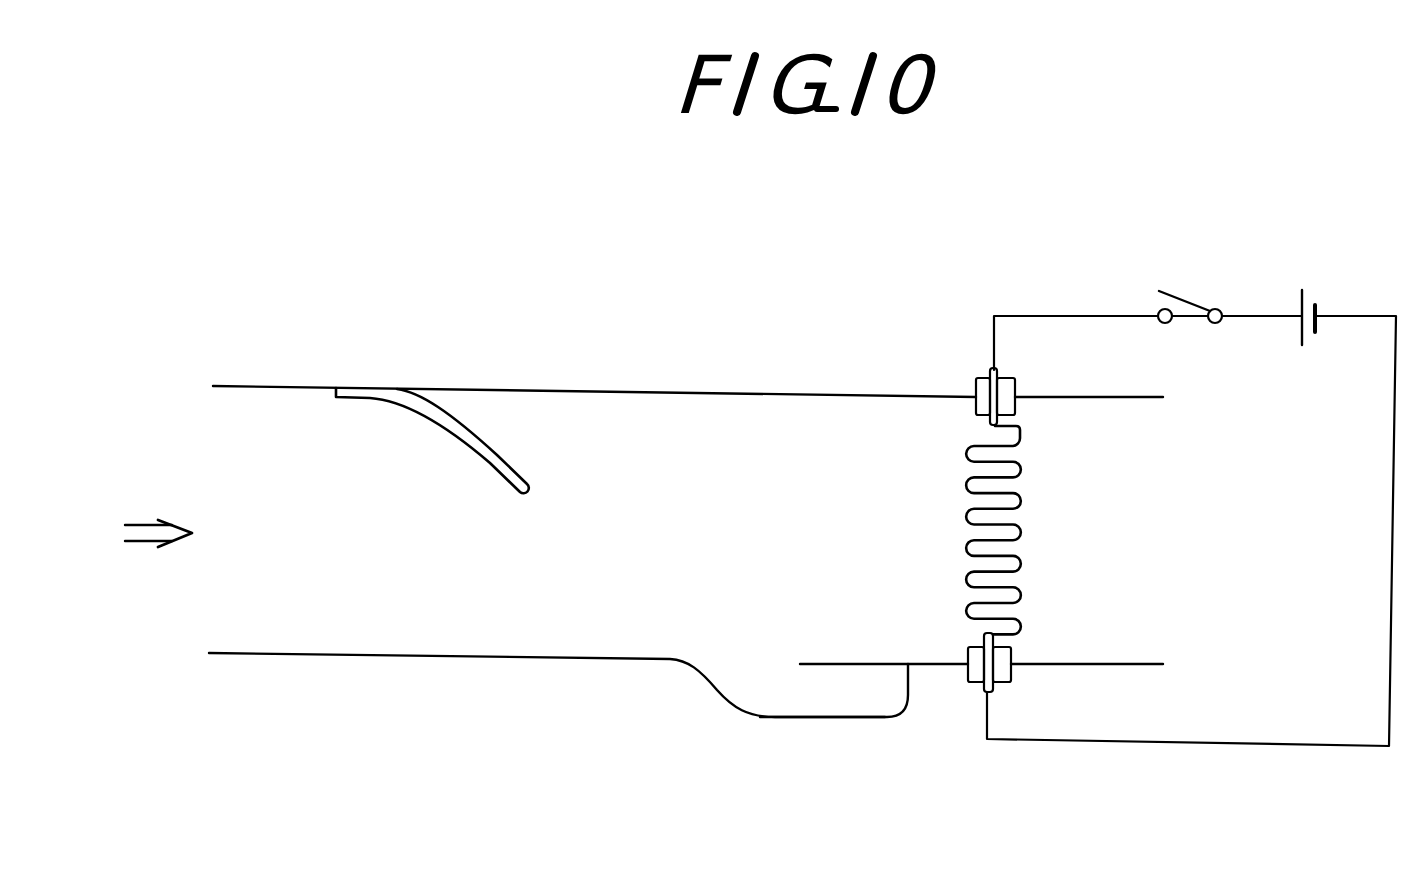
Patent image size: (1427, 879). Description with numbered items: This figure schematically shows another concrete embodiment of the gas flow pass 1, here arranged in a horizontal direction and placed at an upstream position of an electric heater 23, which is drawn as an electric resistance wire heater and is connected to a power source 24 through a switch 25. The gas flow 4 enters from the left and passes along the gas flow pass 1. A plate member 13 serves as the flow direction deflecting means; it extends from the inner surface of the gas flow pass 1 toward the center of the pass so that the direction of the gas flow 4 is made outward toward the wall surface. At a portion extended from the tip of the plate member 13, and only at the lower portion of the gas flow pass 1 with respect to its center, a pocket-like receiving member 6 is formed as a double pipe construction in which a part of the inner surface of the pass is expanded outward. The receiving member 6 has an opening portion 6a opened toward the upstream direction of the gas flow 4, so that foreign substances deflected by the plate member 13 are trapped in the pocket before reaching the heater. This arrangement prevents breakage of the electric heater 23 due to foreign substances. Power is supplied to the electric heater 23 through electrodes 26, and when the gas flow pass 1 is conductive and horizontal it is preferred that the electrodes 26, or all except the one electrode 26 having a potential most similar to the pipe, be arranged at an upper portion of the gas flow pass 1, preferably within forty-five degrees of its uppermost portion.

The gas flow pass 1 is at (712, 386).
The gas flow 4 is at (160, 524).
The receiving member 6 is at (868, 664).
The opening portion 6a is at (797, 689).
The plate member 13 is at (480, 442).
The electric heater 23 is at (1020, 562).
The power source 24 is at (1317, 310).
The switch 25 is at (1183, 302).
The electrodes 26 is at (1017, 385).